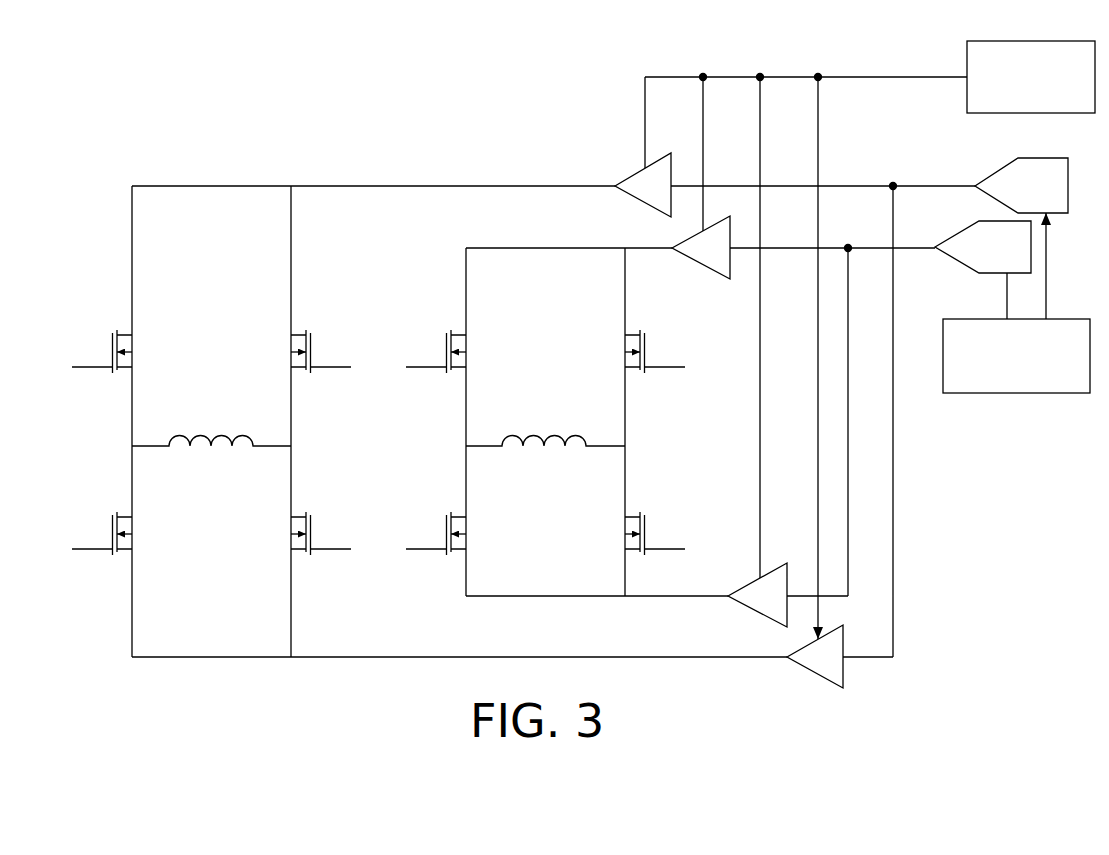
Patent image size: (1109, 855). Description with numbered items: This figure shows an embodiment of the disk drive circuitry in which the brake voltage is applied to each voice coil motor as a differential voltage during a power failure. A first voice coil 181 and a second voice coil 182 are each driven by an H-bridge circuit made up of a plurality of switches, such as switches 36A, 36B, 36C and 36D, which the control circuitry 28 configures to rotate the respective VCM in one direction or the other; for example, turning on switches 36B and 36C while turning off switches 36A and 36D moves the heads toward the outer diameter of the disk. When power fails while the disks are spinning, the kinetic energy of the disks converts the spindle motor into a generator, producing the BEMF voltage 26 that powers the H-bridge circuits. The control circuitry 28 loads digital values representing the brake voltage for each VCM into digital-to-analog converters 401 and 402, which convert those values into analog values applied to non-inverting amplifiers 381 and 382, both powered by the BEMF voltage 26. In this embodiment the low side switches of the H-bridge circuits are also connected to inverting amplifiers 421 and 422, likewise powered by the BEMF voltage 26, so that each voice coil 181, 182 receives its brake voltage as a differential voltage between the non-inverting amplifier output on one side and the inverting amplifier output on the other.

The BEMF voltage 26 is at (851, 76).
The control circuitry 28 is at (1018, 395).
The switch 36A is at (110, 331).
The switch 36B is at (318, 331).
The switch 36C is at (110, 511).
The switch 36D is at (315, 512).
The first voice coil 181 is at (212, 424).
The second voice coil 182 is at (547, 423).
The non-inverting amplifier 381 is at (628, 172).
The non-inverting amplifier 382 is at (692, 256).
The digital-to-analog converter 401 is at (1000, 168).
The digital-to-analog converter 402 is at (955, 262).
The inverting amplifier 421 is at (812, 671).
The inverting amplifier 422 is at (746, 584).